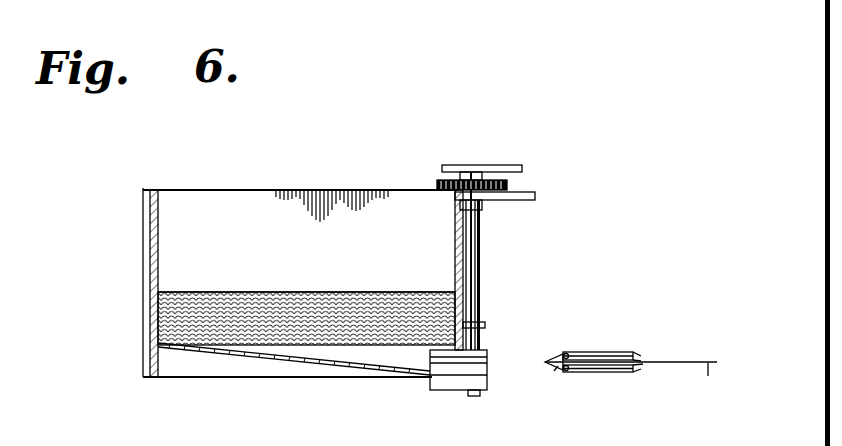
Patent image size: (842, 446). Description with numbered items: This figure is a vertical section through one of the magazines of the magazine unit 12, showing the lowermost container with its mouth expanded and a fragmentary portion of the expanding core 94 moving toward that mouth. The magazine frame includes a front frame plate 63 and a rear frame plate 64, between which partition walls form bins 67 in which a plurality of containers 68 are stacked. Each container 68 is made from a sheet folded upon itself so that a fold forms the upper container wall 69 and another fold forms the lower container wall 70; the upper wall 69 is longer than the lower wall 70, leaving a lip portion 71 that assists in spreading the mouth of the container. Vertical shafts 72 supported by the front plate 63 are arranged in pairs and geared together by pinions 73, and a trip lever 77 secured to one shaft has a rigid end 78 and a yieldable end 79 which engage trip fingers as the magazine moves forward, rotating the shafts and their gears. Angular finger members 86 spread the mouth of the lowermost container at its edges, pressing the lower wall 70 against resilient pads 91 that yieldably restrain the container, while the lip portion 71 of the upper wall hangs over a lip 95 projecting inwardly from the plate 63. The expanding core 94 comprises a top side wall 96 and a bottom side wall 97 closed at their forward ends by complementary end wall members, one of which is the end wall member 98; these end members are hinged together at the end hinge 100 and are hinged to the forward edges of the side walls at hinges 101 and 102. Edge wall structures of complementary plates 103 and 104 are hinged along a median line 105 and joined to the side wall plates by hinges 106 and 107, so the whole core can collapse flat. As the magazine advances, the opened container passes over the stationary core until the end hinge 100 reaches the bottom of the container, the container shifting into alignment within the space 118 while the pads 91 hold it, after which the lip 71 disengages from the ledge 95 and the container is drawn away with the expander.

The magazine unit 12 is at (270, 207).
The rear frame plate 64 is at (156, 222).
The bin 67 is at (173, 262).
The container 68 is at (265, 289).
The upper container wall 69 is at (413, 292).
The lower container wall 70 is at (355, 293).
The lip portion 71 is at (453, 292).
The shaft 72 is at (480, 286).
The front frame plate 63 is at (463, 248).
The pinion 73 is at (437, 185).
The trip lever 77 is at (478, 165).
The rigid end 78 is at (506, 166).
The yieldable end 79 is at (448, 165).
The finger member 86 is at (466, 375).
The resilient pad 91 is at (440, 383).
The lip 95 is at (480, 325).
The space 118 is at (212, 363).
The expanding core 94 is at (549, 352).
The end hinge 100 is at (549, 361).
The hinge 101 is at (567, 357).
The hinge 102 is at (567, 369).
The top side wall 96 is at (615, 355).
The bottom side wall 97 is at (620, 372).
The end wall member 98 is at (556, 368).
The edge wall plate 103 is at (640, 359).
The edge wall plate 104 is at (645, 365).
The median line hinge 105 is at (713, 383).
The hinge 106 is at (640, 355).
The hinge 107 is at (636, 372).